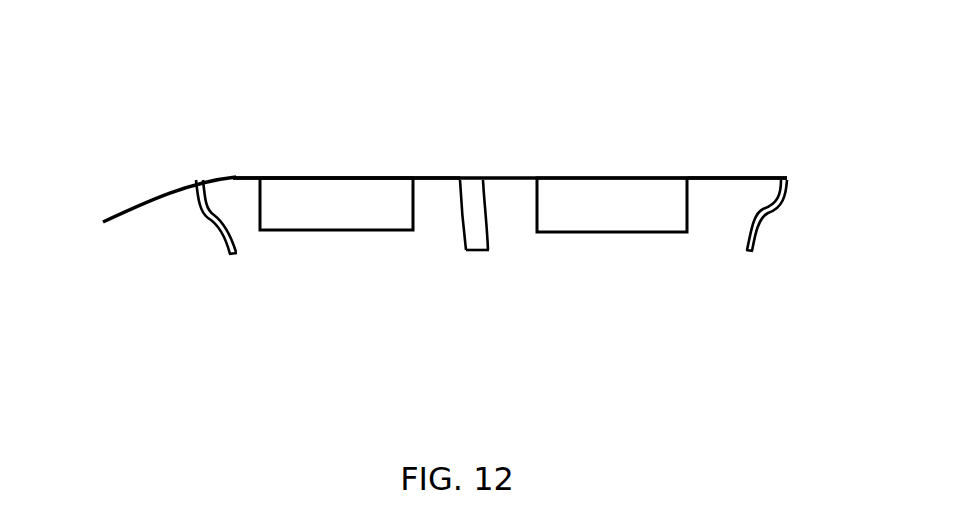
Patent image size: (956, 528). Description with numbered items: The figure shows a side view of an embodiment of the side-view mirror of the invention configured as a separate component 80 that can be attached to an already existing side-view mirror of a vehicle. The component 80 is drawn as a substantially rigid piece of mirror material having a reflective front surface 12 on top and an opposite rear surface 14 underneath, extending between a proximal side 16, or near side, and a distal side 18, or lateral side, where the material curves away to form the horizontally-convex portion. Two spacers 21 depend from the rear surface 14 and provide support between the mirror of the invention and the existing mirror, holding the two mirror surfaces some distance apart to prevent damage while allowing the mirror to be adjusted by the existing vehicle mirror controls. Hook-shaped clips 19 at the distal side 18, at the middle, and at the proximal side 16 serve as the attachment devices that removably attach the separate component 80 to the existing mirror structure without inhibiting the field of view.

The separate component 80 is at (445, 193).
The front surface 12 is at (432, 175).
The rear surface 14 is at (715, 181).
The proximal side 16 is at (760, 175).
The distal side 18 is at (155, 177).
The hook tabs 19 is at (220, 248).
The spacers 21 is at (320, 226).